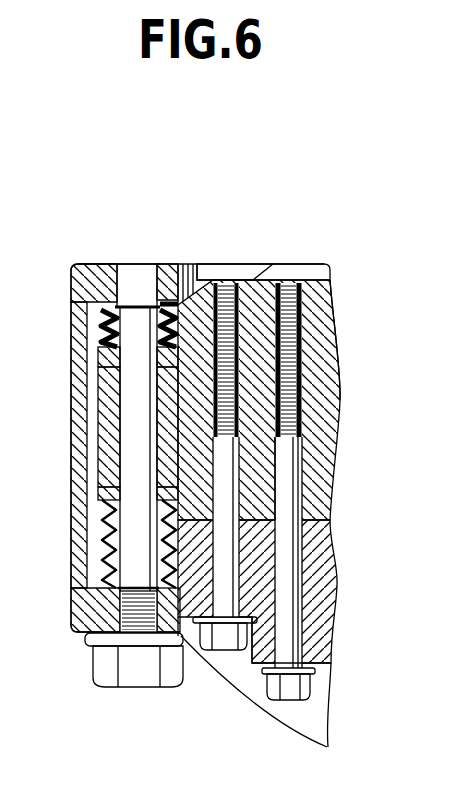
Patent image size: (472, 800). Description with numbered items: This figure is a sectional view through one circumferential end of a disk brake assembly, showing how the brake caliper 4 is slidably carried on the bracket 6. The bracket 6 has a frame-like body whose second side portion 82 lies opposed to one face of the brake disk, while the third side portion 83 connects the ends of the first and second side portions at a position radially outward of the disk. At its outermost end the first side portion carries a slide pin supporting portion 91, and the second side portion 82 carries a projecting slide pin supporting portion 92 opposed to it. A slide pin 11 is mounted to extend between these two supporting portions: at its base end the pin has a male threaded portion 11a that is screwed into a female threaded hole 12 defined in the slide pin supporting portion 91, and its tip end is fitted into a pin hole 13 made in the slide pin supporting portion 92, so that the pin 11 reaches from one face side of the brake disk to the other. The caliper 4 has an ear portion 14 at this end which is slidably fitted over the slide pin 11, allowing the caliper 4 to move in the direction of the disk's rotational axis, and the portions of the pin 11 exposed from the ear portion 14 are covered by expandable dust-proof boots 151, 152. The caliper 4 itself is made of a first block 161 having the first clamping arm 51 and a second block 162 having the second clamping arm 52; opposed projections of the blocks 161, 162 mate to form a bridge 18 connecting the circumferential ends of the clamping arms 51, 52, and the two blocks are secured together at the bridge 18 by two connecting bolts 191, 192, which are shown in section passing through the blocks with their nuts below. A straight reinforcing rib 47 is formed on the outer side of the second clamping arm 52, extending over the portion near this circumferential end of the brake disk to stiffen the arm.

The brake caliper 4 is at (313, 262).
The reinforcing rib 47 is at (285, 272).
The bracket 6 is at (198, 263).
The second side portion 82 is at (217, 270).
The slide pin supporting portion 92 is at (107, 270).
The pin hole 13 is at (127, 277).
The dust-proof boot 152 is at (108, 334).
The third side portion 83 is at (80, 383).
The ear portion 14 is at (110, 429).
The dust-proof boot 151 is at (102, 541).
The male threaded portion 11a is at (112, 592).
The female threaded hole 12 is at (120, 618).
The slide pin supporting portion 91 is at (97, 648).
The slide pin 11 is at (140, 689).
The connecting bolt 191 is at (225, 637).
The connecting bolt 192 is at (290, 689).
The first clamping arm 51 is at (263, 660).
The second clamping arm 52 is at (327, 301).
The second block 162 is at (337, 379).
The first block 161 is at (338, 571).
The bridge 18 is at (262, 465).